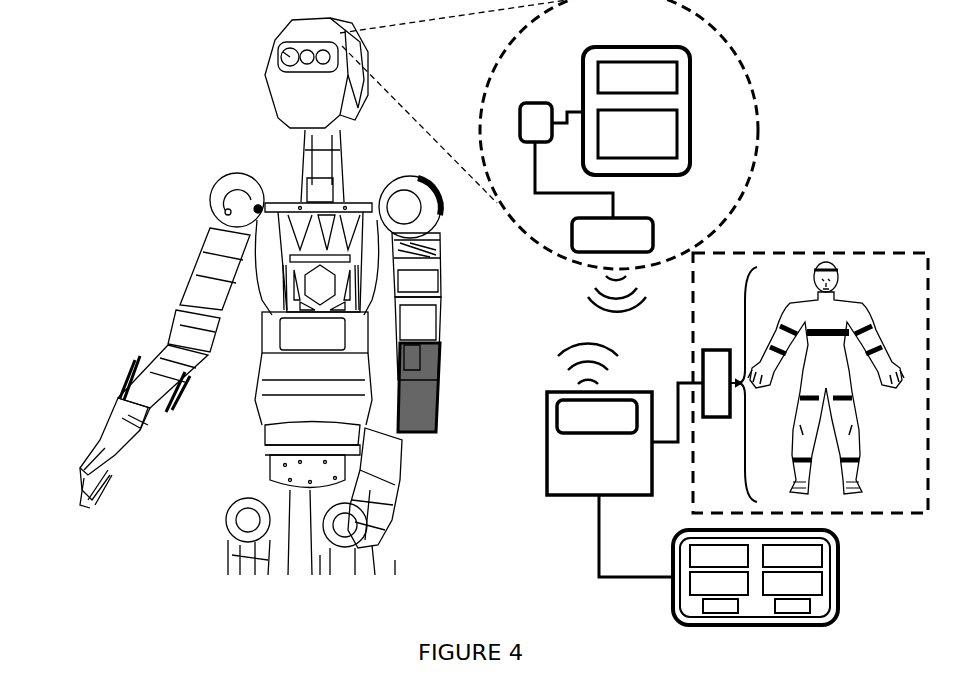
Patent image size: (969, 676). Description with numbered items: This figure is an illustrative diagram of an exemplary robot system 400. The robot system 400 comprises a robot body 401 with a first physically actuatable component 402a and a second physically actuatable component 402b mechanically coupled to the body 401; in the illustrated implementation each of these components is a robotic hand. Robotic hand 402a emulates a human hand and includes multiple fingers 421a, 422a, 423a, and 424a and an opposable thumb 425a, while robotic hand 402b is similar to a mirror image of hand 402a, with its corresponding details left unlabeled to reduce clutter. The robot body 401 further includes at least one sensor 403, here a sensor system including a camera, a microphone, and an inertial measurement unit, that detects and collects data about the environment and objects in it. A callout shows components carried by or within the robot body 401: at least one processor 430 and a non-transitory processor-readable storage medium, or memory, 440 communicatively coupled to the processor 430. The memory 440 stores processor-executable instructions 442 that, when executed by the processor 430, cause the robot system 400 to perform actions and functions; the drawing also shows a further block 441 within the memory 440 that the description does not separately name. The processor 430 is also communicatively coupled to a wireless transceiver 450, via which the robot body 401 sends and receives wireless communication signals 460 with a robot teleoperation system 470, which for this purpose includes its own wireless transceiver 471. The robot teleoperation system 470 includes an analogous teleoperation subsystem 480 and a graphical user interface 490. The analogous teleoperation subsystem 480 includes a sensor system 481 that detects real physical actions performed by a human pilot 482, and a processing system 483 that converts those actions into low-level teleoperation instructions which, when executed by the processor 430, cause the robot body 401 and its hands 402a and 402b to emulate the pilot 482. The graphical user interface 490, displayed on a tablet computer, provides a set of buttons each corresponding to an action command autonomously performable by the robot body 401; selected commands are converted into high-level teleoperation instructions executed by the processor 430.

The robot system 400 is at (126, 90).
The robot body 401 is at (282, 205).
The first physically actuatable component 402a is at (100, 442).
The second physically actuatable component 402b is at (396, 472).
The sensor 403 is at (285, 50).
The finger 421a is at (84, 470).
The finger 422a is at (82, 490).
The finger 423a is at (90, 505).
The finger 424a is at (102, 498).
The opposable thumb 425a is at (138, 445).
The processor 430 is at (528, 115).
The non-transitory processor-readable storage medium 440 is at (672, 168).
The processor 441 is at (637, 92).
The processor-executable instructions 442 is at (635, 146).
The wireless transceiver 450 is at (630, 249).
The wireless communication signals 460 is at (582, 305).
The robot teleoperation system 470 is at (612, 484).
The wireless transceiver 471 is at (598, 431).
The analogous teleoperation subsystem 480 is at (850, 252).
The sensor system 481 is at (786, 330).
The human pilot 482 is at (845, 327).
The processing system 483 is at (718, 368).
The graphical user interface 490 is at (832, 555).